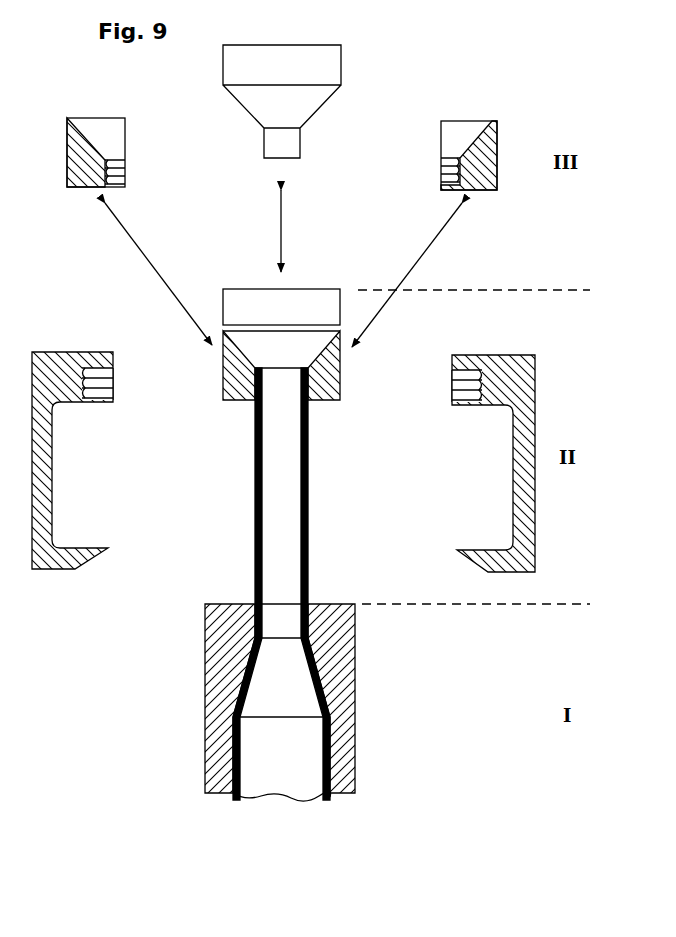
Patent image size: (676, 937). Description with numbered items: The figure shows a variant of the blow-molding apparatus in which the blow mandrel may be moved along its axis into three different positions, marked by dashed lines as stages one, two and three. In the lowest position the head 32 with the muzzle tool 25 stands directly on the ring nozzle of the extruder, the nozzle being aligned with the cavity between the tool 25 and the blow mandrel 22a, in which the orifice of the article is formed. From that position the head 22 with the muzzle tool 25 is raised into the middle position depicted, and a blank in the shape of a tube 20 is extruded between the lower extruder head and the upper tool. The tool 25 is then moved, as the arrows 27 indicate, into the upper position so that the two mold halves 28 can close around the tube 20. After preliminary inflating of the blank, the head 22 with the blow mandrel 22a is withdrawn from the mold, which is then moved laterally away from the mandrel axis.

The arrows 27 is at (132, 233).
The head 22 is at (315, 300).
The muzzle tool 25 is at (328, 387).
The blow mandrel 22a is at (282, 402).
The tube 20 is at (308, 493).
The head 32 is at (355, 693).
The mold halves 28 is at (85, 555).